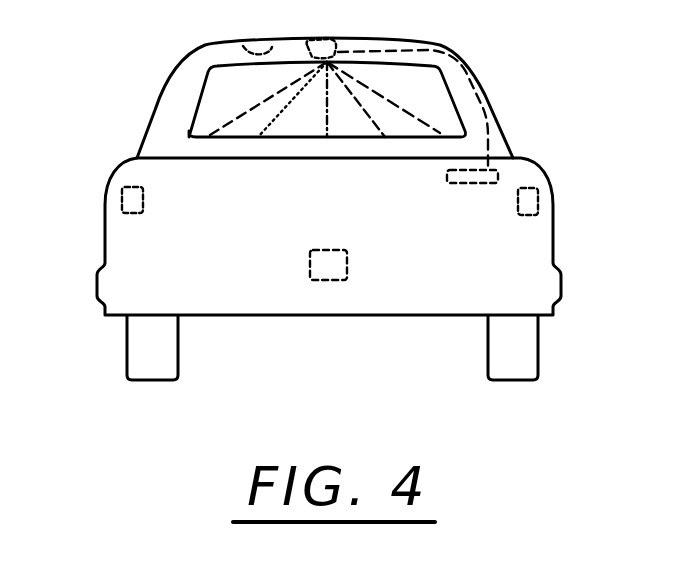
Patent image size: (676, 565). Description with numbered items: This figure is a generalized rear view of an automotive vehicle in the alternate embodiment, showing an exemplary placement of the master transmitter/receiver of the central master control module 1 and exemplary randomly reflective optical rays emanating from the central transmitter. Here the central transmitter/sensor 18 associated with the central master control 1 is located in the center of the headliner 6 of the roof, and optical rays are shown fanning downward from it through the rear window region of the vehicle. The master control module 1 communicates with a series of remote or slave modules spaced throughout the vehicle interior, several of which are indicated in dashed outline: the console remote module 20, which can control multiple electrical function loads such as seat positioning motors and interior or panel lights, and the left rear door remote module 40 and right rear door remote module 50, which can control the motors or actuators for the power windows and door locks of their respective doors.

The central or master multiplex control module 1 is at (498, 180).
The headliner 6 is at (243, 42).
The sensor 18 is at (308, 40).
The console remote module 20 is at (330, 281).
The left rear door remote module 40 is at (122, 204).
The right rear door remote module 50 is at (538, 196).